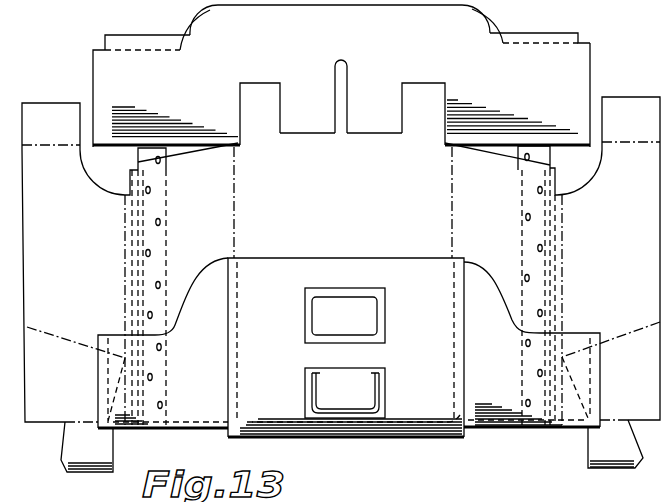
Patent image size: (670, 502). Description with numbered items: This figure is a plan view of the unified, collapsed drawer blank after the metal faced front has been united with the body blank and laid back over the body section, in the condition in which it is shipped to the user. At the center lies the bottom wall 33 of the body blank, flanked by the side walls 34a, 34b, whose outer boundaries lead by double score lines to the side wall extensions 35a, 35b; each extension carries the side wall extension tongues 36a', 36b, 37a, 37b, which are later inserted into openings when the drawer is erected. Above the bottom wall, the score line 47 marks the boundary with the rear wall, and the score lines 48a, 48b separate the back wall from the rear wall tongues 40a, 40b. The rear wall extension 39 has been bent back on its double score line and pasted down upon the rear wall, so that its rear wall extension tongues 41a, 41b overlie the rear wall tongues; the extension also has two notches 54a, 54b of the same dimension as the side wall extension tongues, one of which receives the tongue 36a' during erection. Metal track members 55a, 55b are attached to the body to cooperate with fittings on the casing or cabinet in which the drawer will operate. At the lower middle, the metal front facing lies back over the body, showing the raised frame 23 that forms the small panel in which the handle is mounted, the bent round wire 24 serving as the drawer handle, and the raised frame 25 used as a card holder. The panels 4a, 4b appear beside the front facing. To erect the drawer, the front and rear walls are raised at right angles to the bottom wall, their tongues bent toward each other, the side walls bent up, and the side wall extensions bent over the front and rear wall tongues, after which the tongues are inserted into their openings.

The rear wall extension 39 is at (340, 69).
The rear wall tongue 40b is at (93, 68).
The rear wall extension tongue 41b is at (166, 77).
The notch 54b is at (260, 114).
The score line 47 is at (325, 145).
The notch 54a is at (423, 114).
The rear wall extension tongue 41a is at (517, 77).
The rear wall tongue 40a is at (590, 78).
The side wall extension tongue 36b is at (50, 146).
The side wall extension 35b is at (73, 286).
The side wall extension tongue 37b is at (87, 447).
The metal track member 55b is at (138, 162).
The side wall 34b is at (166, 297).
The score line 48b is at (237, 222).
The bottom wall 33 is at (346, 314).
The left bottom panel 4b is at (163, 343).
The raised frame 25 is at (383, 319).
The raised frame 23 is at (385, 388).
The bent round wire 24 is at (336, 410).
The right side panel upper portion 36a' is at (605, 146).
The side wall extension 35a is at (611, 285).
The side wall extension tongue 37a is at (615, 444).
The metal track member 55a is at (550, 165).
The side wall 34a is at (516, 297).
The score line 48a is at (452, 195).
The right bottom panel 4a is at (532, 344).